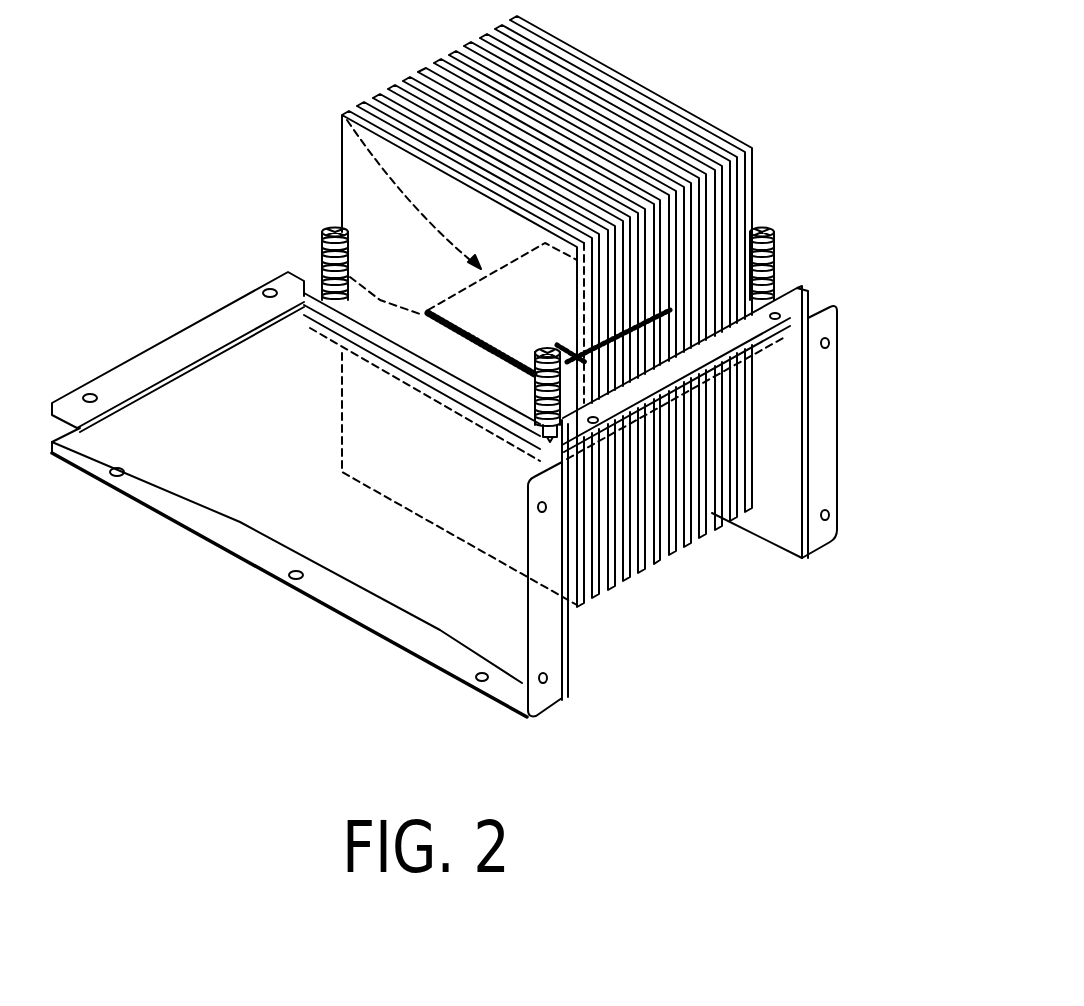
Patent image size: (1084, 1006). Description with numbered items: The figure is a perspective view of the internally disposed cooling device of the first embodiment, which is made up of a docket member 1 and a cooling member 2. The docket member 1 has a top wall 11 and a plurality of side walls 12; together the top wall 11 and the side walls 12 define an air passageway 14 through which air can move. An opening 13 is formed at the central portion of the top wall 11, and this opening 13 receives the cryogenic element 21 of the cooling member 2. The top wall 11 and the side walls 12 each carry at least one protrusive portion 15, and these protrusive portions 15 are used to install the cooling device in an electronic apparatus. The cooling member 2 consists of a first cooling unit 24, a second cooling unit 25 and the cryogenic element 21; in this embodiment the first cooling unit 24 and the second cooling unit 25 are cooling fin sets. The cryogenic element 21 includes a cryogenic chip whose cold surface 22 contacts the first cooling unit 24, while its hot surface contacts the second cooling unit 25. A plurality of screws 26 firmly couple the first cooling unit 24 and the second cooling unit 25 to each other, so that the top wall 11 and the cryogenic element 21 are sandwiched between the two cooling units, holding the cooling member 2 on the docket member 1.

The docket member 1 is at (299, 598).
The top wall 11 is at (292, 290).
The side walls 12 is at (198, 452).
The opening 13 is at (320, 258).
The air passageway 14 is at (678, 590).
The protrusive portion 15 is at (827, 413).
The cooling member 2 is at (790, 186).
The cryogenic element 21 is at (342, 116).
The cold surface 22 is at (478, 282).
The first cooling unit 24 is at (355, 176).
The second cooling unit 25 is at (752, 448).
The screws 26 is at (322, 237).